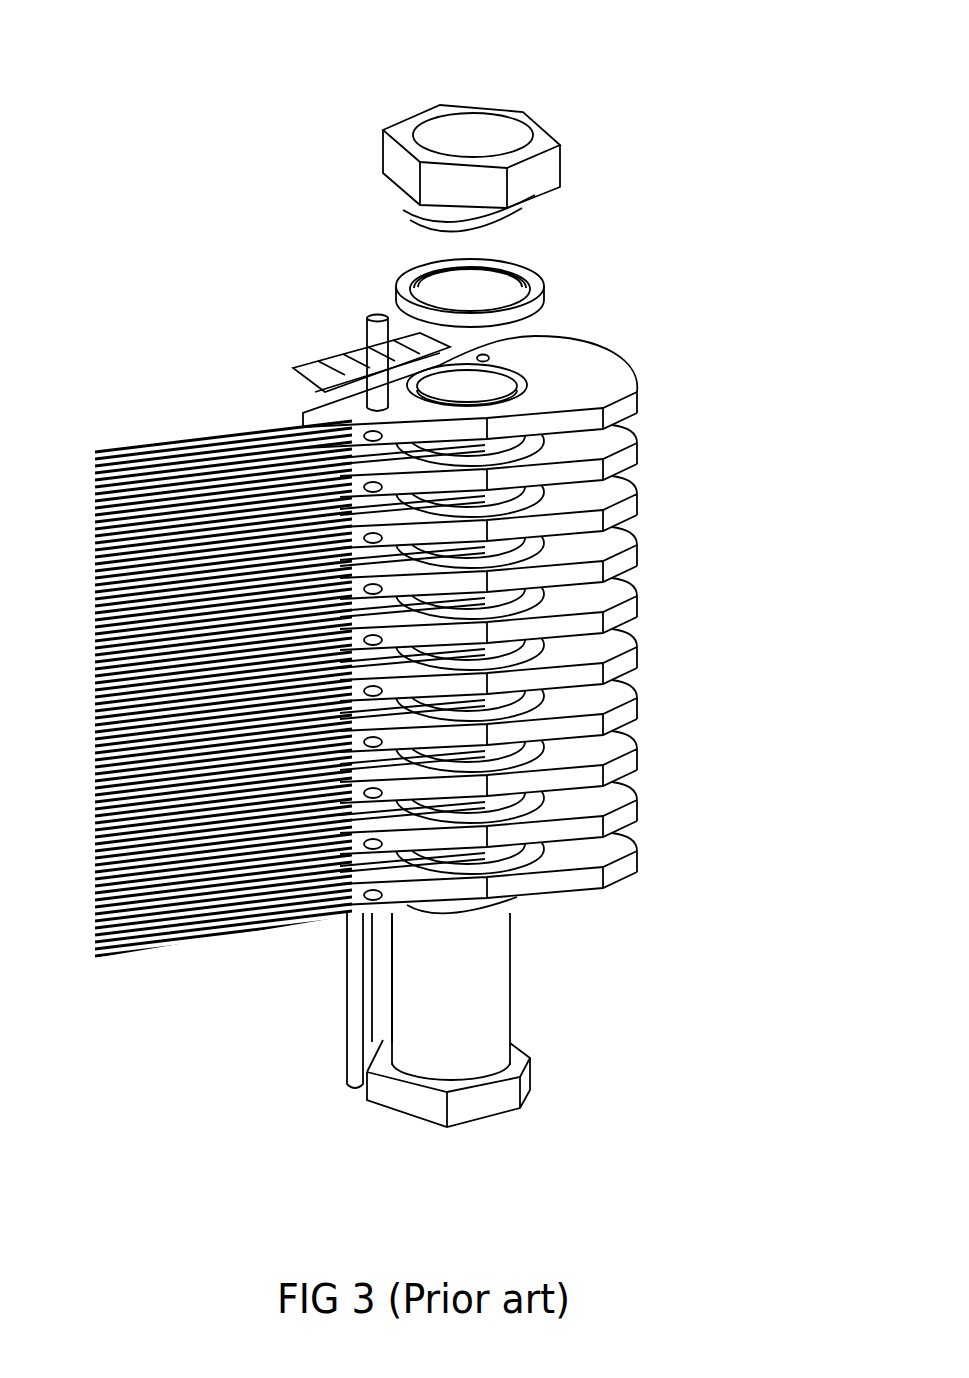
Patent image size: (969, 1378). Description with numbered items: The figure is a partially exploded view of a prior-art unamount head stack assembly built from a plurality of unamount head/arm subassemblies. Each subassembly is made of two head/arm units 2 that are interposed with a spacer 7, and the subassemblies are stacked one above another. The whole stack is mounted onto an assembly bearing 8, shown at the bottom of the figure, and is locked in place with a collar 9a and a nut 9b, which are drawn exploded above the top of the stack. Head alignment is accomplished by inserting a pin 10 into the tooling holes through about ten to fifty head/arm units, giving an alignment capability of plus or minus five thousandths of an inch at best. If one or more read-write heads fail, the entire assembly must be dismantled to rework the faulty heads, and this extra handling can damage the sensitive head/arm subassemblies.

The nut 9b is at (545, 165).
The collar 9a is at (540, 275).
The head/arm unit 2 is at (522, 368).
The spacer 7 is at (607, 383).
The pin 10 is at (375, 352).
The assembly bearing 8 is at (460, 1055).